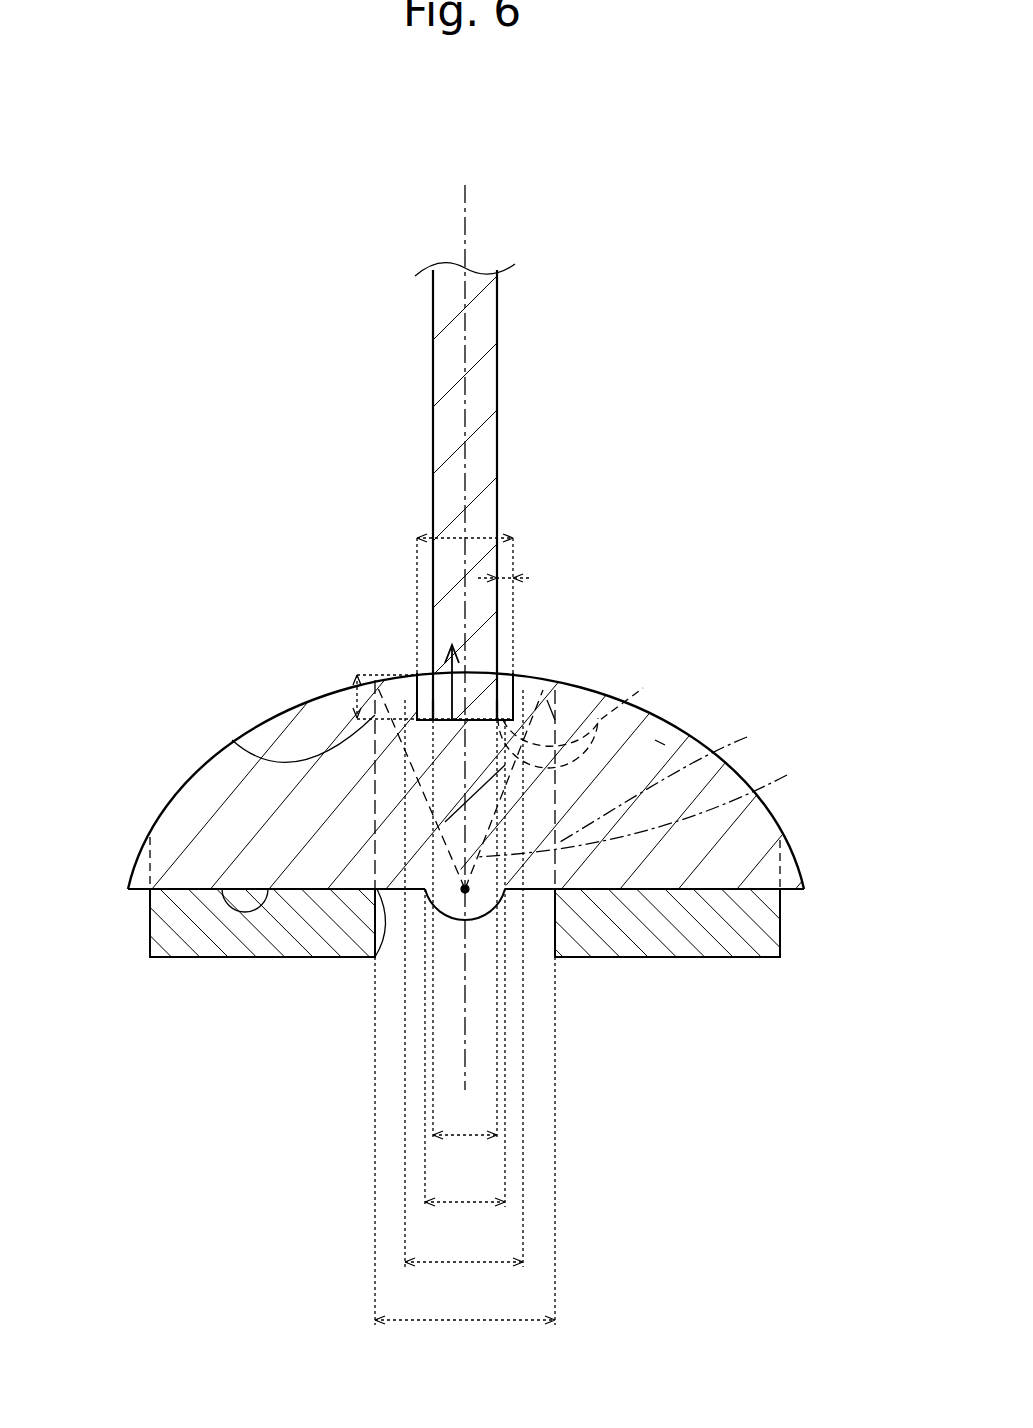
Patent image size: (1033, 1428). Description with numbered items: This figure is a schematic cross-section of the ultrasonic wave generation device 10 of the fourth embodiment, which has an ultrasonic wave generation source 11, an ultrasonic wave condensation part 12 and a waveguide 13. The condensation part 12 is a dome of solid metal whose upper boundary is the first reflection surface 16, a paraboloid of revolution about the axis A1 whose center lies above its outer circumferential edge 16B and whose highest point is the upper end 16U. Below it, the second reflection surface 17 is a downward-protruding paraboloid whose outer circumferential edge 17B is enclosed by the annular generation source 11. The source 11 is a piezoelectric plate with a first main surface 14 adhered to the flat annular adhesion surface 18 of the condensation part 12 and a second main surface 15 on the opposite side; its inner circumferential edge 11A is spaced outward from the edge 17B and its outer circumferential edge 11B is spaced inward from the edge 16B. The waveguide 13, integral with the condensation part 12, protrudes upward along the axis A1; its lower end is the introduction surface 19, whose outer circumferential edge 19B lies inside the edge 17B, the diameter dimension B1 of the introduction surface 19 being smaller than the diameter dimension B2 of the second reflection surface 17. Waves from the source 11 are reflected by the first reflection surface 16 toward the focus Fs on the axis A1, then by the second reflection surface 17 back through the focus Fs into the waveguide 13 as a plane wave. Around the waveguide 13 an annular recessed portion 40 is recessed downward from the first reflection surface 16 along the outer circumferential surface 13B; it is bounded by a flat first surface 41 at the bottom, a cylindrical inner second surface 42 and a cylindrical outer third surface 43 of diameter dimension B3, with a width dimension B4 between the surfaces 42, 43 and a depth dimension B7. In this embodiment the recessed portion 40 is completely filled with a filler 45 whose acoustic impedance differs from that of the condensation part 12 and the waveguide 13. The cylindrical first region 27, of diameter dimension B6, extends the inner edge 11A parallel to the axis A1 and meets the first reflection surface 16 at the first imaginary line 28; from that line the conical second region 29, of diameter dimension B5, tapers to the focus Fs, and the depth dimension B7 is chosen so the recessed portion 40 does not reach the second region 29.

The ultrasonic wave generation device 10 is at (229, 418).
The ultrasonic wave generation source 11 is at (236, 958).
The inner circumferential edge of the ultrasonic wave generation source 11A is at (383, 961).
The outer circumferential edge of the ultrasonic wave generation source 11B is at (150, 956).
The ultrasonic wave condensation part 12 is at (672, 730).
The waveguide 13 is at (487, 360).
The outer circumferential surface of the waveguide 13B is at (498, 412).
The first main surface 14 is at (727, 887).
The second main surface 15 is at (645, 958).
The first reflection surface 16 is at (287, 706).
The outer circumferential edge of the first reflection surface 16B is at (140, 888).
The upper end of the first reflection surface 16U is at (427, 673).
The second reflection surface 17 is at (463, 908).
The outer circumferential edge of the second reflection surface 17B is at (508, 890).
The adhesion surface 18 is at (222, 885).
The introduction surface 19 is at (660, 740).
The outer circumferential edge of the introduction surface 19B is at (505, 765).
The first region 27 is at (671, 774).
The first imaginary line 28 is at (547, 700).
The second region 29 is at (646, 803).
The recessed portion 40 is at (430, 673).
The first surface 41 is at (232, 740).
The second surface 42 is at (510, 687).
The third surface 43 is at (515, 660).
The filler 45 is at (513, 700).
The axis A1 is at (466, 228).
The diameter dimension of the introduction surface B1 is at (452, 1137).
The diameter dimension of the second reflection surface B2 is at (455, 1204).
The diameter dimension of the third surface B3 is at (514, 536).
The width dimension of the recessed portion B4 is at (513, 560).
The diameter dimension of the second region B5 is at (462, 1264).
The diameter dimension of the first region B6 is at (495, 1322).
The depth dimension of the recessed portion B7 is at (355, 700).
The focus Fs is at (432, 903).